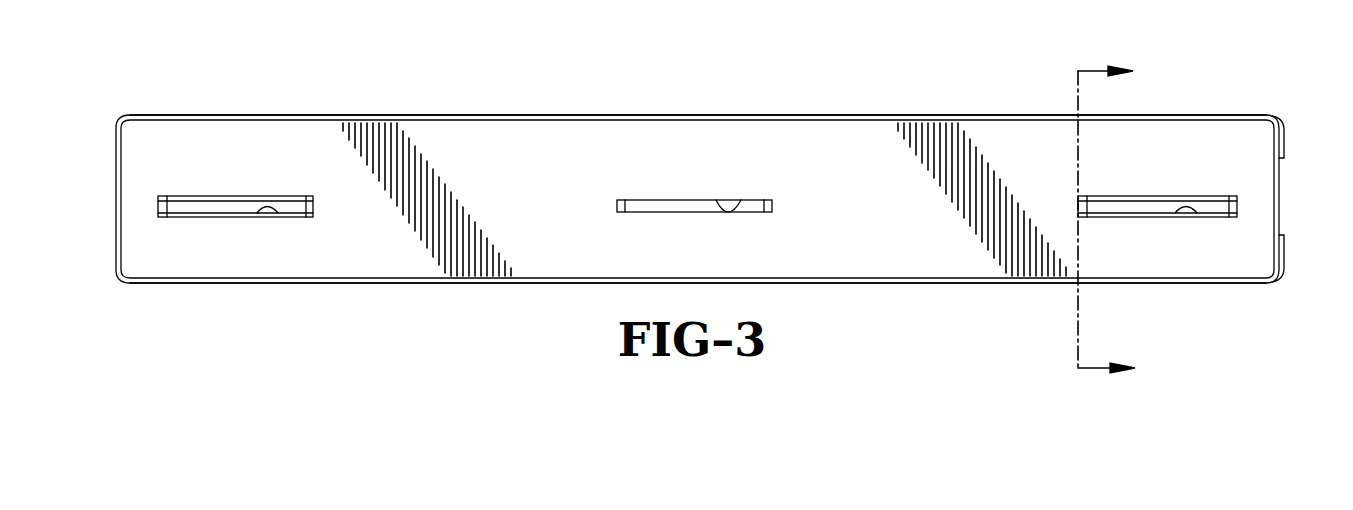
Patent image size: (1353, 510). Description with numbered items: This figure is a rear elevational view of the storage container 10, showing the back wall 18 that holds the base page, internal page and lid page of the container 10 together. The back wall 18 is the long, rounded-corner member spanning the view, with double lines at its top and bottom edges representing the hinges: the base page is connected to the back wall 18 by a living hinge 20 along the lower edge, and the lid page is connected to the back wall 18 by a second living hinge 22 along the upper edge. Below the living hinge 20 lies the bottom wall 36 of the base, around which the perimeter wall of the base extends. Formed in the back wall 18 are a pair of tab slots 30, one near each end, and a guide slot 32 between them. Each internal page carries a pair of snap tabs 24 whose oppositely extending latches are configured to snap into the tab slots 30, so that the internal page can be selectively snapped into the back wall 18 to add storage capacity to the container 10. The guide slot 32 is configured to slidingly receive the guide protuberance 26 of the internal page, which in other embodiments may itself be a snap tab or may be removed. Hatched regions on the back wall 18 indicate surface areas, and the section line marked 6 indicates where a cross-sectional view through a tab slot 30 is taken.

The storage container 10 is at (848, 92).
The back wall 18 is at (887, 233).
The living hinge 20 is at (337, 283).
The second living hinge 22 is at (240, 120).
The snap tab 24 is at (212, 207).
The guide protuberance 26 is at (660, 203).
The tab slot 30 is at (278, 210).
The guide slot 32 is at (741, 200).
The bottom wall 36 is at (410, 284).
The section line 6- 6 is at (1116, 221).